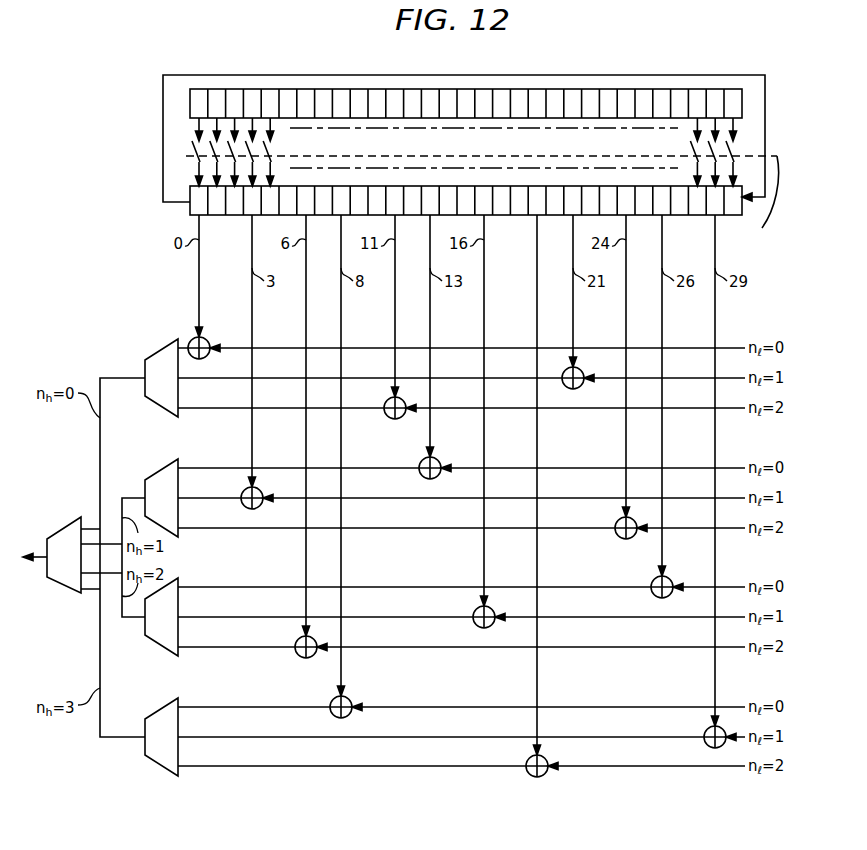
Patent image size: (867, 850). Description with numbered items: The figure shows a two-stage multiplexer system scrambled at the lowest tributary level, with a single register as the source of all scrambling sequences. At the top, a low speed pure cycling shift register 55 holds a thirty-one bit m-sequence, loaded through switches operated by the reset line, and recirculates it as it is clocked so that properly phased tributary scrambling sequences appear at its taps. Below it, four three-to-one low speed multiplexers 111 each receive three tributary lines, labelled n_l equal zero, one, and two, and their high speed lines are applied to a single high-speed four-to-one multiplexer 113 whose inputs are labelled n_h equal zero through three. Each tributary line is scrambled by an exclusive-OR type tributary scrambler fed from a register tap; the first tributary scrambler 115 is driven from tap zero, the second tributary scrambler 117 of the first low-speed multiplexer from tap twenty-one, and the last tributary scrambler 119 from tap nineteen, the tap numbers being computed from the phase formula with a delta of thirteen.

The shift register 55 is at (155, 148).
The low speed multiplexer 111 is at (156, 358).
The high-speed multiplexer 113 is at (70, 594).
The tributary scrambler 115 is at (192, 341).
The tributary scrambler 117 is at (580, 386).
The tributary scrambler 119 is at (530, 775).